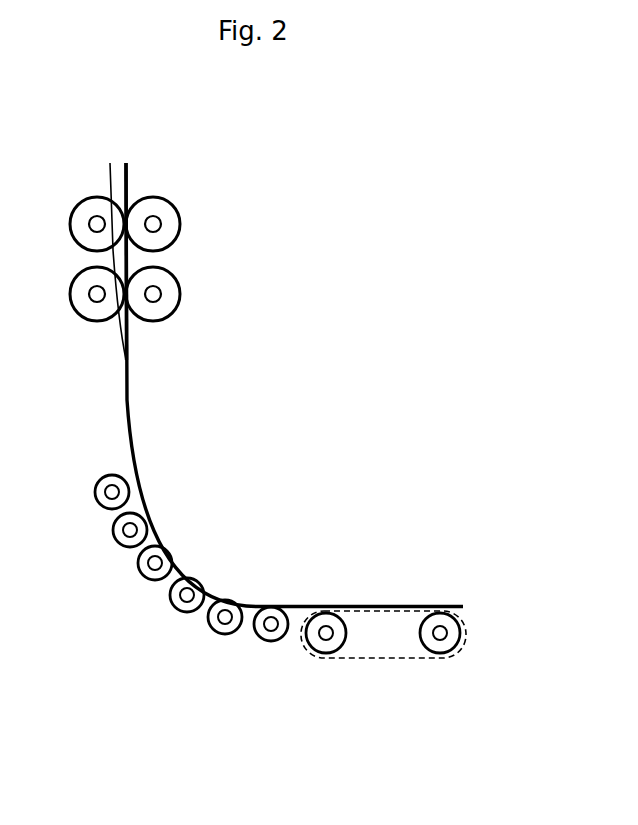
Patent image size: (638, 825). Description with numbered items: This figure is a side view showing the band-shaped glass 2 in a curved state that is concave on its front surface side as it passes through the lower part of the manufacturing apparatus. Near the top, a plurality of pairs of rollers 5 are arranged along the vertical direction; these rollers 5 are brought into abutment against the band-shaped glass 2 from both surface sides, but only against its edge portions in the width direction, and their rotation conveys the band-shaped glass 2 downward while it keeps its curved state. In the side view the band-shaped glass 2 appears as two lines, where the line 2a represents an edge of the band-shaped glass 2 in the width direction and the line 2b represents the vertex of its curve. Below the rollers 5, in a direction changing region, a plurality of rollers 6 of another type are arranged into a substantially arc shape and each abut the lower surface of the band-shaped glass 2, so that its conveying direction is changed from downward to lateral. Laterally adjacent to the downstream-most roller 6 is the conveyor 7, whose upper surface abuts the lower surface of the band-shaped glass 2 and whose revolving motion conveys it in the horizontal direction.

The band-shaped glass 2 is at (129, 392).
The edge of the band-shaped glass in the width direction 2a is at (128, 178).
The vertex of the curve of the band-shaped glass 2b is at (109, 175).
The rollers 5 is at (71, 231).
The rollers of another type 6 is at (139, 574).
The conveyor 7 is at (469, 632).